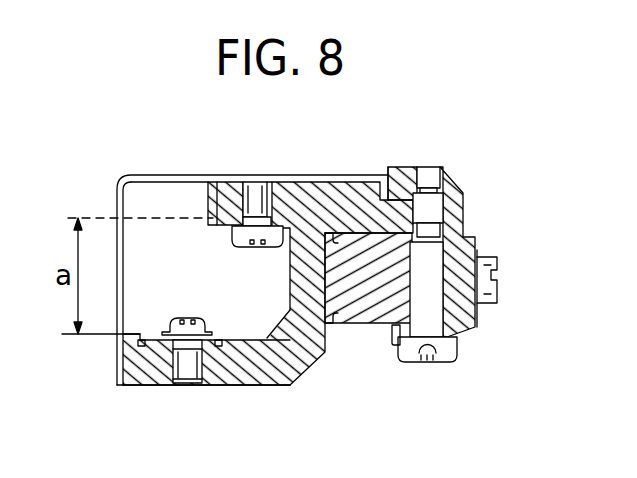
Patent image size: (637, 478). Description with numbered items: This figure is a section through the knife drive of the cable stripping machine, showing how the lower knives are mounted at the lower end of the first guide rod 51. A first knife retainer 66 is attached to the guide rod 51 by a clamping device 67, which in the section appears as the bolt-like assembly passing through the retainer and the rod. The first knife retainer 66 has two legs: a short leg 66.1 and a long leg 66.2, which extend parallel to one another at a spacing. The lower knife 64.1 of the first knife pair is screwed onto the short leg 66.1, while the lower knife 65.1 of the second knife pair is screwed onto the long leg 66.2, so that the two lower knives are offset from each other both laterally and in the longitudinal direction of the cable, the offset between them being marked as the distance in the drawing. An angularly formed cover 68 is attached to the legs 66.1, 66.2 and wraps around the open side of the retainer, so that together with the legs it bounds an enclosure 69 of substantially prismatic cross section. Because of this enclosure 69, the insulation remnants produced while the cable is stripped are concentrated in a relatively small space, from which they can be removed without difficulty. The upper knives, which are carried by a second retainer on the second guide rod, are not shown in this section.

The cover 68 is at (144, 177).
The first knife retainer 66 is at (344, 182).
The short leg 66.1 is at (225, 195).
The long leg 66.2 is at (253, 368).
The lower knife 64.1 is at (219, 230).
The lower knife 65.1 is at (163, 343).
The clamping device 67 is at (477, 234).
The enclosure 69 is at (140, 292).
The first guide rod 51 is at (347, 292).